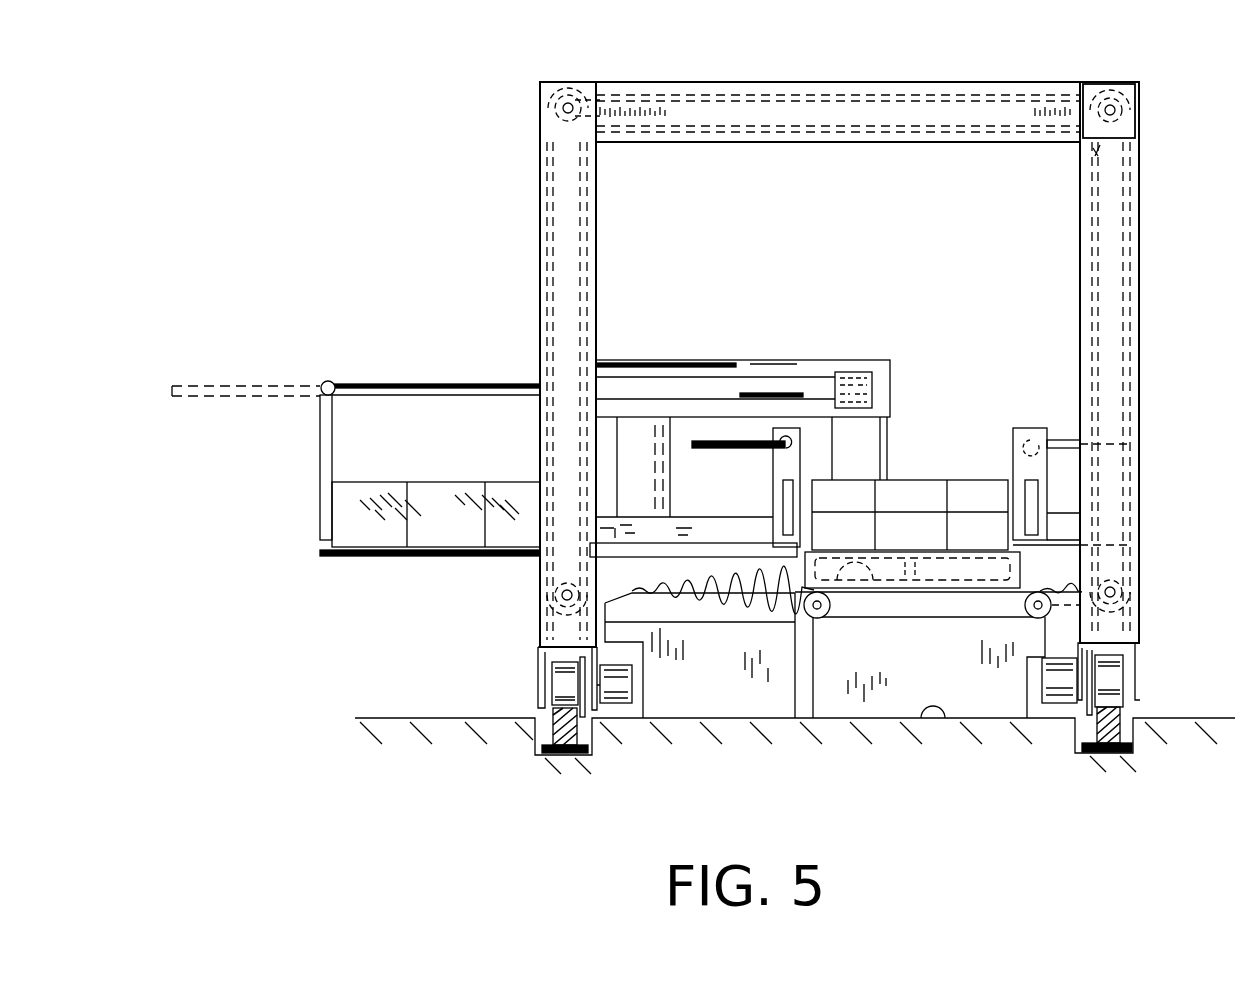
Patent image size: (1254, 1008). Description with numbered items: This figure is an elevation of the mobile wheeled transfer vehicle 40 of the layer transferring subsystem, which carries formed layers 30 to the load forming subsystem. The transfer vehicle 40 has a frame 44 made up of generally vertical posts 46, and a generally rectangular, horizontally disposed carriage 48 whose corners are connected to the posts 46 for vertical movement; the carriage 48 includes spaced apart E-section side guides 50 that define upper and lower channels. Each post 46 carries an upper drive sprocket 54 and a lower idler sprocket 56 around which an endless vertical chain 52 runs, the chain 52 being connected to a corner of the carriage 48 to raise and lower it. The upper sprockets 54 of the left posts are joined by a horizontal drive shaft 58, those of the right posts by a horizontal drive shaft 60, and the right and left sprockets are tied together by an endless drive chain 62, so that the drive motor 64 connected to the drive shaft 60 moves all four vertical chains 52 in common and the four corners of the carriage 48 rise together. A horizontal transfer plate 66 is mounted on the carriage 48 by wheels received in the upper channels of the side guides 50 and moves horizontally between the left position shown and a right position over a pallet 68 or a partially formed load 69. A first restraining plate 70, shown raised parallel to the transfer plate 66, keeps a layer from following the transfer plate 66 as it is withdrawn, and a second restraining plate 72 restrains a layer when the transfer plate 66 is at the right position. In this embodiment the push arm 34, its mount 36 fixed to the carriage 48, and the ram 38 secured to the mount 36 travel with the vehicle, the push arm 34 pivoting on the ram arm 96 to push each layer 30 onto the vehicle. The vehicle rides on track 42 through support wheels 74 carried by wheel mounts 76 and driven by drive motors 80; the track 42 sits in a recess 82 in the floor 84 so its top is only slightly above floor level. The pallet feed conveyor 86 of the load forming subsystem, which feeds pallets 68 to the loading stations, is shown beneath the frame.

The layer 30 is at (362, 482).
The push arm 34 is at (356, 423).
The mount 36 is at (892, 378).
The ram 38 is at (800, 370).
The transfer vehicle 40 is at (731, 78).
The track 42 is at (835, 710).
The frame 44 is at (836, 333).
The post 46 is at (597, 335).
The carriage 48 is at (1060, 542).
The side guide 50 is at (640, 513).
The endless vertical chain 52 is at (548, 270).
The upper drive sprocket 54 is at (575, 100).
The lower idler sprocket 56 is at (1133, 585).
The horizontal drive shaft 58 is at (555, 120).
The horizontal drive shaft 60 is at (1093, 158).
The endless drive chain 62 is at (885, 96).
The drive motor 64 is at (1125, 82).
The transfer plate 66 is at (700, 543).
The pallet 68 is at (862, 580).
The partially formed load 69 is at (913, 478).
The first restraining plate 70 is at (727, 442).
The second restraining plate 72 is at (1063, 437).
The support wheel 74 is at (565, 660).
The wheel mount 76 is at (540, 668).
The drive motor 80 is at (620, 704).
The recess 82 is at (598, 750).
The floor 84 is at (940, 725).
The pallet feed conveyor 86 is at (700, 610).
The ram arm 96 is at (385, 385).